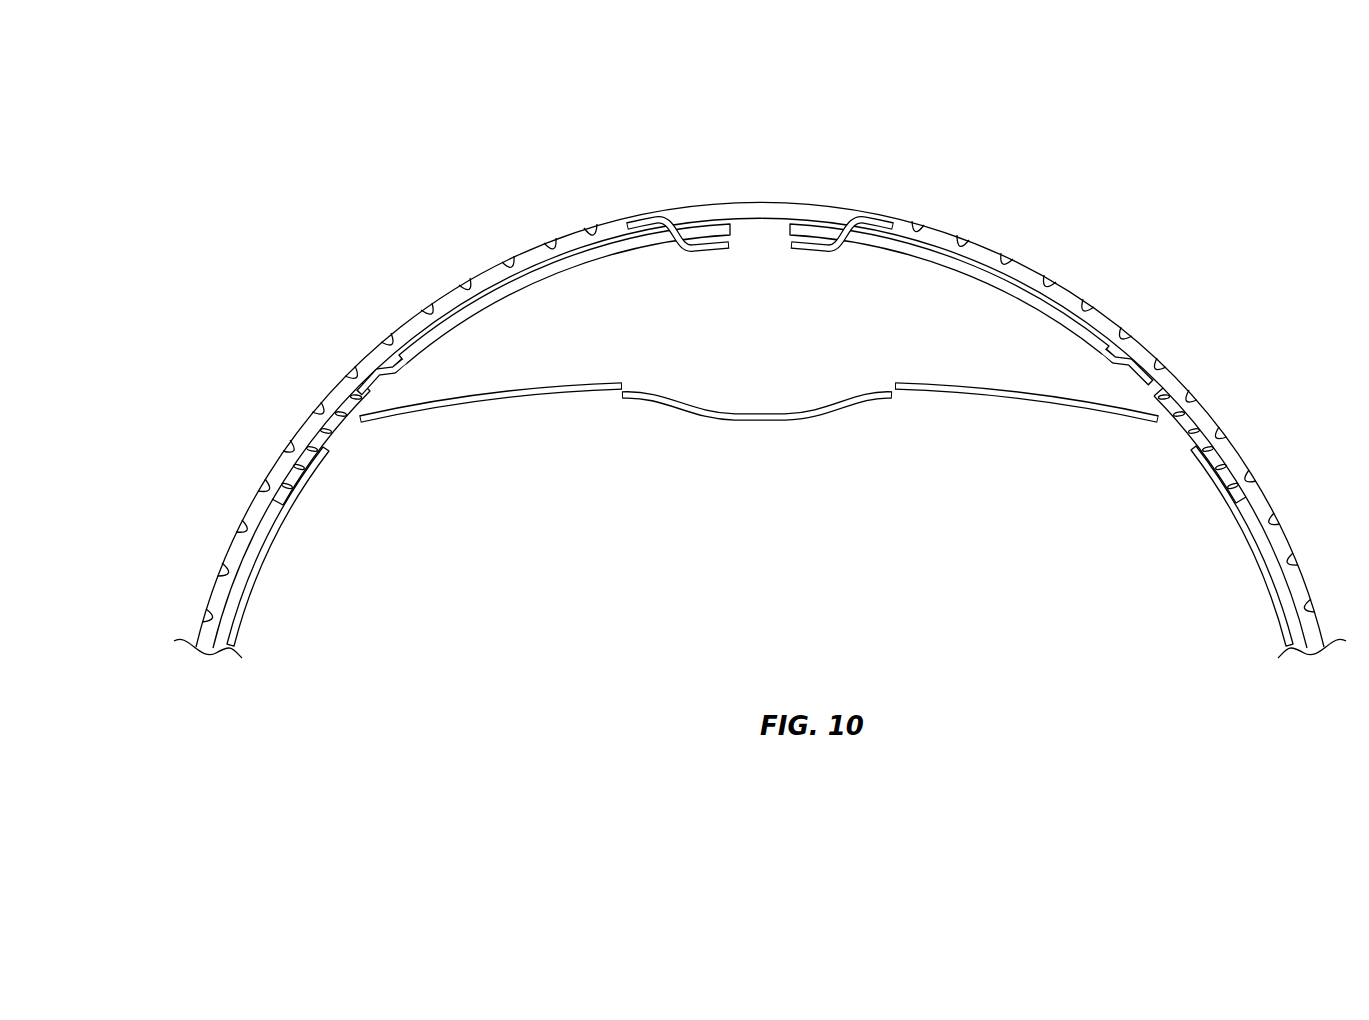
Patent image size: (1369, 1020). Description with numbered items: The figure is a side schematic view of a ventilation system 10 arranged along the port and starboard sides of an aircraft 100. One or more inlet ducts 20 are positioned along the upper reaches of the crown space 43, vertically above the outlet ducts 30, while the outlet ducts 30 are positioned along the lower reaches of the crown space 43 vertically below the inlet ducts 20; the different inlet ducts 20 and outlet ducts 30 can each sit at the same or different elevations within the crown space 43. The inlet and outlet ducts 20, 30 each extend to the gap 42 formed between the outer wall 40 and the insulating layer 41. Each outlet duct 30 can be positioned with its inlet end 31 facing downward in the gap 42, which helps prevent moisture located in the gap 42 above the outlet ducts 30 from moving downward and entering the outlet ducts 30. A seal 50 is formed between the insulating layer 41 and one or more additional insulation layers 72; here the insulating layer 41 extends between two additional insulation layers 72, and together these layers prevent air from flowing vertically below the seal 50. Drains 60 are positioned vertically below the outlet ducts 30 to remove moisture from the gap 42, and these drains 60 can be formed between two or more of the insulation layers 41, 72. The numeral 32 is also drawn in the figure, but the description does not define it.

The ventilation system 10 is at (972, 145).
The inlet duct 20 is at (700, 256).
The outlet duct 30 is at (414, 367).
The inlet end 31 is at (348, 387).
The connecting tab 32 is at (420, 357).
The outer wall 40 is at (611, 222).
The insulating layer 41 is at (551, 268).
The gap 42 is at (488, 268).
The crown space 43 is at (783, 355).
The seal 50 is at (328, 493).
The drain 60 is at (1188, 515).
The additional insulation layer 72 is at (242, 525).
The aircraft 100 is at (228, 541).